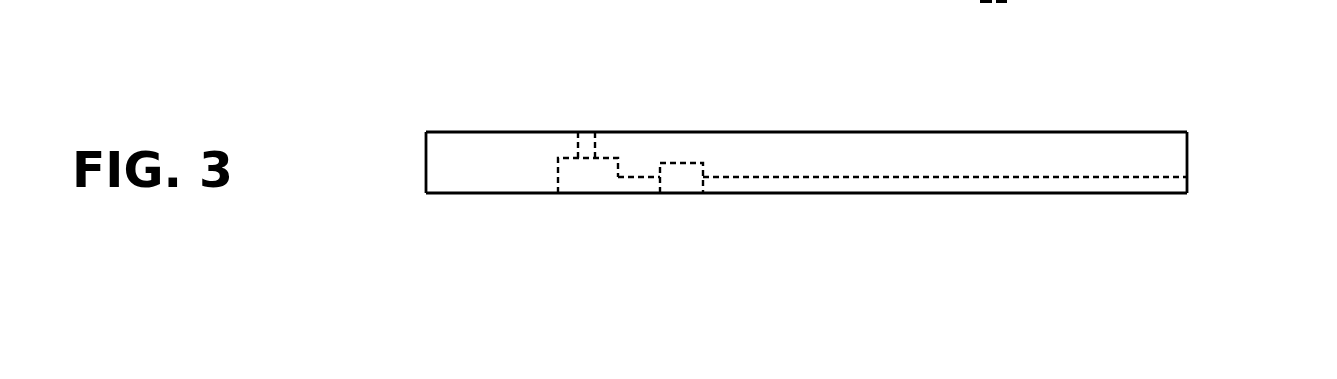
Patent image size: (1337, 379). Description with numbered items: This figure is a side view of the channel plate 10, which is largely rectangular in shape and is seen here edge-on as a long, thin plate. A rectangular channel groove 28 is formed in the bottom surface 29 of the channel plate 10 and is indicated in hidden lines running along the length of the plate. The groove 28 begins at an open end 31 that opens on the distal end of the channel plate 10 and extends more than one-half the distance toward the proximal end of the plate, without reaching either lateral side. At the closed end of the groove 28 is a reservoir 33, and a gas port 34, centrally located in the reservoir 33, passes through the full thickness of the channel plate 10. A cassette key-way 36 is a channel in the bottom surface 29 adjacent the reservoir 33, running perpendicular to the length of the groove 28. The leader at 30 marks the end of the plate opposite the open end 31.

The channel plate 10 is at (655, 122).
The channel groove 28 is at (777, 183).
The bottom surface 29 is at (493, 194).
The first end 30 is at (425, 158).
The open end 31 is at (1188, 157).
The reservoir 33 is at (587, 177).
The gas port 34 is at (588, 133).
The cassette key-way 36 is at (677, 180).